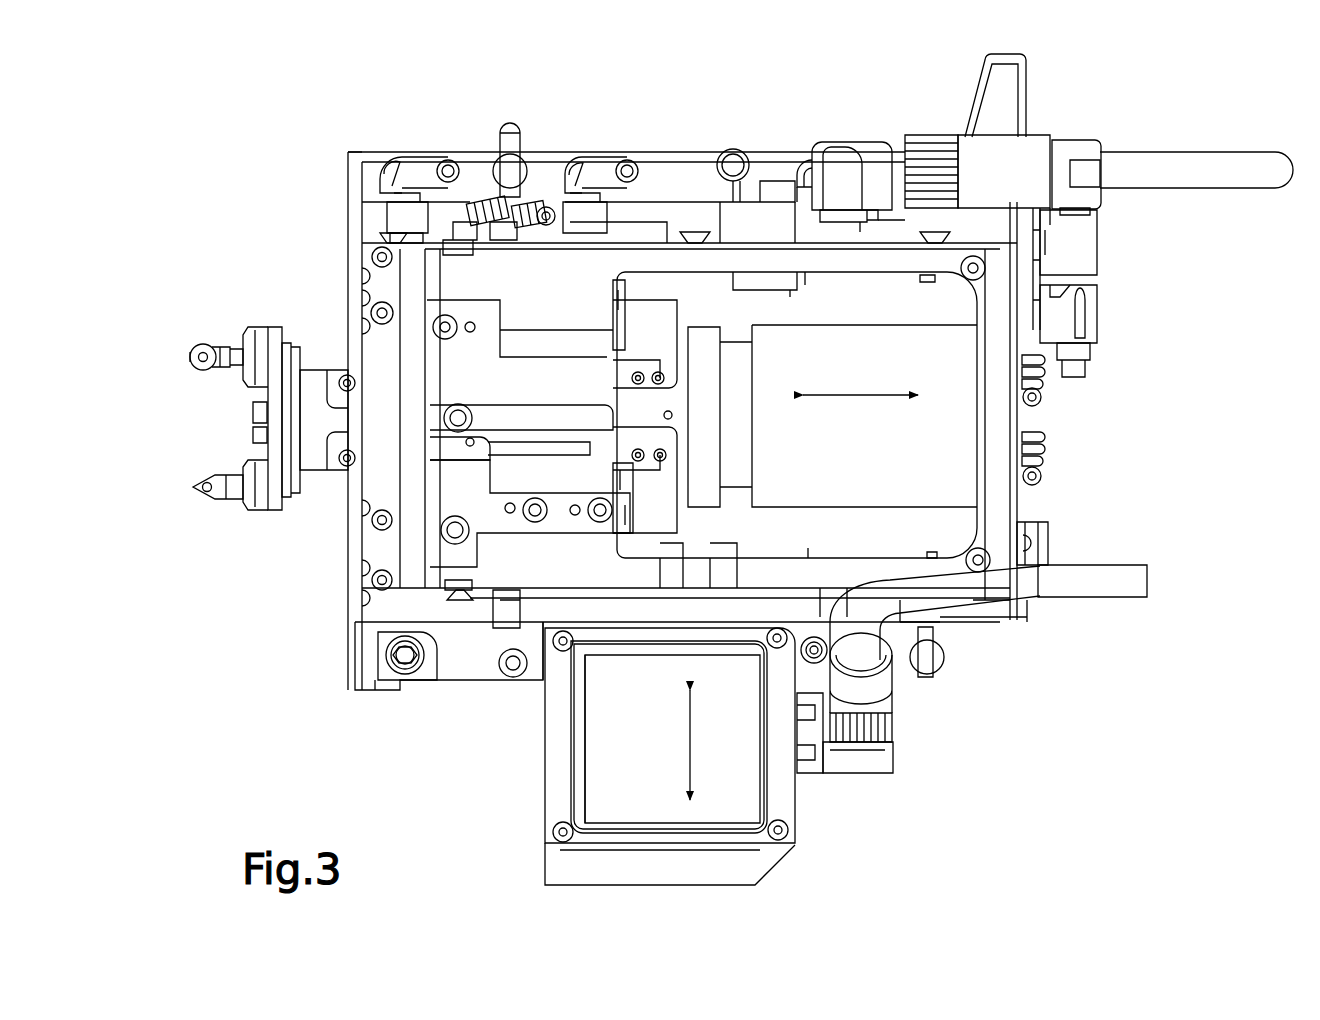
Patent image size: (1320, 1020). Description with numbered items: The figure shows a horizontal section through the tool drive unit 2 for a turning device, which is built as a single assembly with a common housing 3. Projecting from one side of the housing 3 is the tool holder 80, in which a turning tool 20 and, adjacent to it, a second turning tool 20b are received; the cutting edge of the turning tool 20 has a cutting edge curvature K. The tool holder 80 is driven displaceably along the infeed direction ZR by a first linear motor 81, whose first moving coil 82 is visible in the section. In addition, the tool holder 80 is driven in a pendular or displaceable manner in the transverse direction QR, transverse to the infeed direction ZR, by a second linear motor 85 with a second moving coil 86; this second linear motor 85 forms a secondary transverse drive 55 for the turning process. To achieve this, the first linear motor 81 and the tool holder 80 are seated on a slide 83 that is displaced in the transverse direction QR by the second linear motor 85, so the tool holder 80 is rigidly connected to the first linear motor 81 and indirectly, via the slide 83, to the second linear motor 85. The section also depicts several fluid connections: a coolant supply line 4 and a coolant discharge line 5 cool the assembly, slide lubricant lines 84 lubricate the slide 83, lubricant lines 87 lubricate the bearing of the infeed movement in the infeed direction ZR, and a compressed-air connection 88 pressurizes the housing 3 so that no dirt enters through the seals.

The tool drive unit 2 is at (200, 127).
The housing 3 is at (773, 140).
The coolant supply line 4 is at (633, 152).
The coolant discharge line 5 is at (440, 152).
The turning tool 20 is at (183, 347).
The second turning tool 20b is at (183, 490).
The cutting edge curvature K is at (180, 370).
The secondary transverse drive 55 is at (645, 737).
The tool holder 80 is at (265, 325).
The first linear motor 81 is at (1040, 130).
The first moving coil 82 is at (822, 448).
The slide 83 is at (903, 257).
The slide lubricant lines 84 is at (510, 192).
The second linear motor 85 is at (866, 706).
The second moving coil 86 is at (735, 787).
The lubricant lines 87 is at (1045, 398).
The compressed-air connection 88 is at (1060, 325).
The infeed direction ZR is at (860, 378).
The transverse direction QR is at (710, 745).